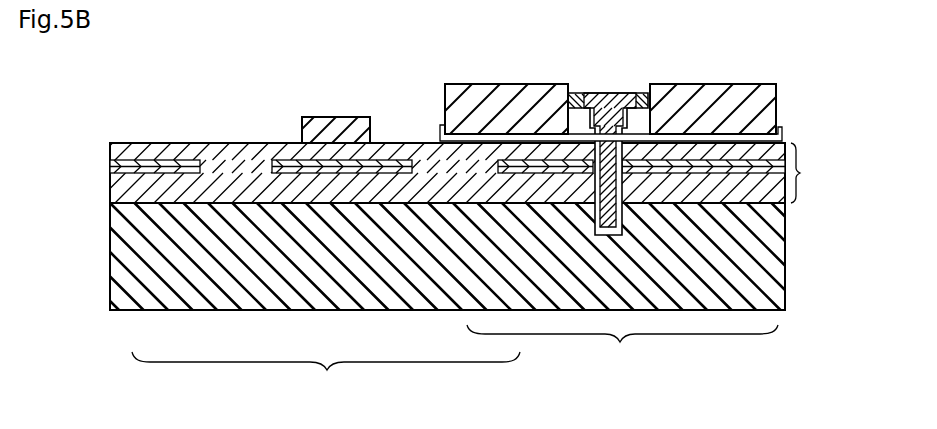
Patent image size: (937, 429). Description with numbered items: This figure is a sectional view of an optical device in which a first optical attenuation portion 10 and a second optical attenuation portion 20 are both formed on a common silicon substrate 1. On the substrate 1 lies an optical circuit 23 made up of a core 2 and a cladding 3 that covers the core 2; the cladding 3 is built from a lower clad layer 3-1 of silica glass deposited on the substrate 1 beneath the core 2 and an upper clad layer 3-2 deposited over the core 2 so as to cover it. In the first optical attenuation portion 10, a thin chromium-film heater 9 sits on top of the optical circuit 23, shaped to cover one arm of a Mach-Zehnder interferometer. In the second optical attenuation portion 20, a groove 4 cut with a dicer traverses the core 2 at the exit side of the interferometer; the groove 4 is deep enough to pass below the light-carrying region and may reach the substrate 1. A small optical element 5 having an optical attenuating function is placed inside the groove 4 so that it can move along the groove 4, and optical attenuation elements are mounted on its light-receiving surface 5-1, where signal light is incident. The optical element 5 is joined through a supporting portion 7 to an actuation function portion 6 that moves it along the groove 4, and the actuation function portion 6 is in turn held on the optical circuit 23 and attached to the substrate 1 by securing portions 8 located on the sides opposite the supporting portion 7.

The substrate 1 is at (127, 273).
The core 2 is at (174, 165).
The cladding 3 is at (262, 187).
The lower clad layer 3-1 is at (130, 206).
The upper clad layer 3-2 is at (128, 150).
The groove 4 is at (615, 235).
The optical element 5 is at (623, 215).
The light-receiving surface 5-1 is at (592, 140).
The actuation function portion 6 is at (513, 112).
The supporting portion 7 is at (604, 107).
The securing portions 8 is at (436, 133).
The heater 9 is at (338, 128).
The first optical attenuation portion 10 is at (326, 380).
The second optical attenuation portion 20 is at (622, 349).
The optical circuit 23 is at (800, 173).